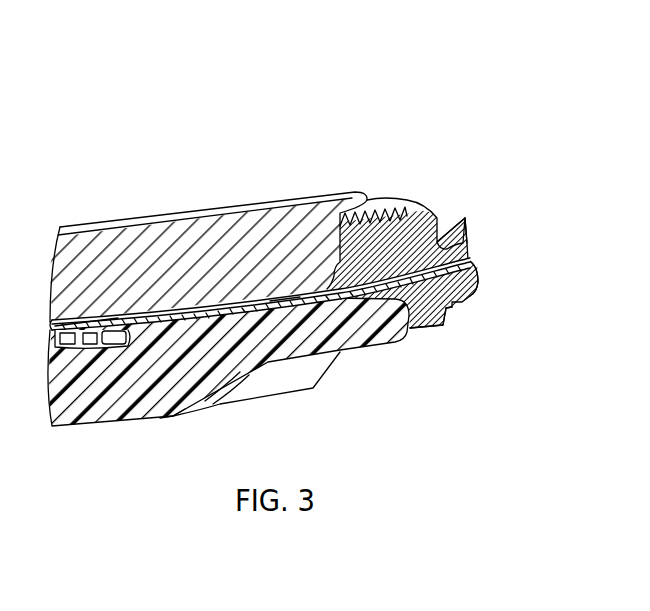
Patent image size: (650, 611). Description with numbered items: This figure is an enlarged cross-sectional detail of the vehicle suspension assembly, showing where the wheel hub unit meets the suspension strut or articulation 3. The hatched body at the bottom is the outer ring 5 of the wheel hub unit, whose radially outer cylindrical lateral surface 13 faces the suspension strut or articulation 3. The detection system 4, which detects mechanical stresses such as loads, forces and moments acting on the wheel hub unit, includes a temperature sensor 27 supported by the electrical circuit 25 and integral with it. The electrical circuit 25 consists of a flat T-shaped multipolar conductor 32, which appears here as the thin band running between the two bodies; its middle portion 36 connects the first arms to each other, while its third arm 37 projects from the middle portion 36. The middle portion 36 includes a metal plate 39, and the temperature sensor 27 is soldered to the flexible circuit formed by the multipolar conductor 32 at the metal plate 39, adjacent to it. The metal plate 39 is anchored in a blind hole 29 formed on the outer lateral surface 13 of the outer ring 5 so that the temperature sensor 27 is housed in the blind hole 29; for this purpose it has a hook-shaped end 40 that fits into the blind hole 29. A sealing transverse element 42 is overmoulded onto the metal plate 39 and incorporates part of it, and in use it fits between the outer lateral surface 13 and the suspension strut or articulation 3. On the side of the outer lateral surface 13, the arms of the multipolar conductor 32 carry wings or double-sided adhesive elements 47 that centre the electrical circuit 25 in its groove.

The suspension strut or articulation 3 is at (206, 223).
The detection system 4 is at (433, 185).
The outer ring 5 is at (155, 410).
The radially outer cylindrical lateral surface 13 is at (240, 308).
The electrical circuit 25 is at (433, 342).
The temperature sensor 27 is at (88, 347).
The blind hole 29 is at (112, 347).
The flat T-shaped multipolar conductor 32 is at (112, 320).
The middle portion 36 is at (286, 290).
The third arm or branch 37 is at (477, 291).
The metal plate 39 is at (333, 348).
The hook-shaped end 40 is at (172, 414).
The sealing transverse element 42 is at (397, 230).
The wings or double-sided adhesive elements 47 is at (458, 238).